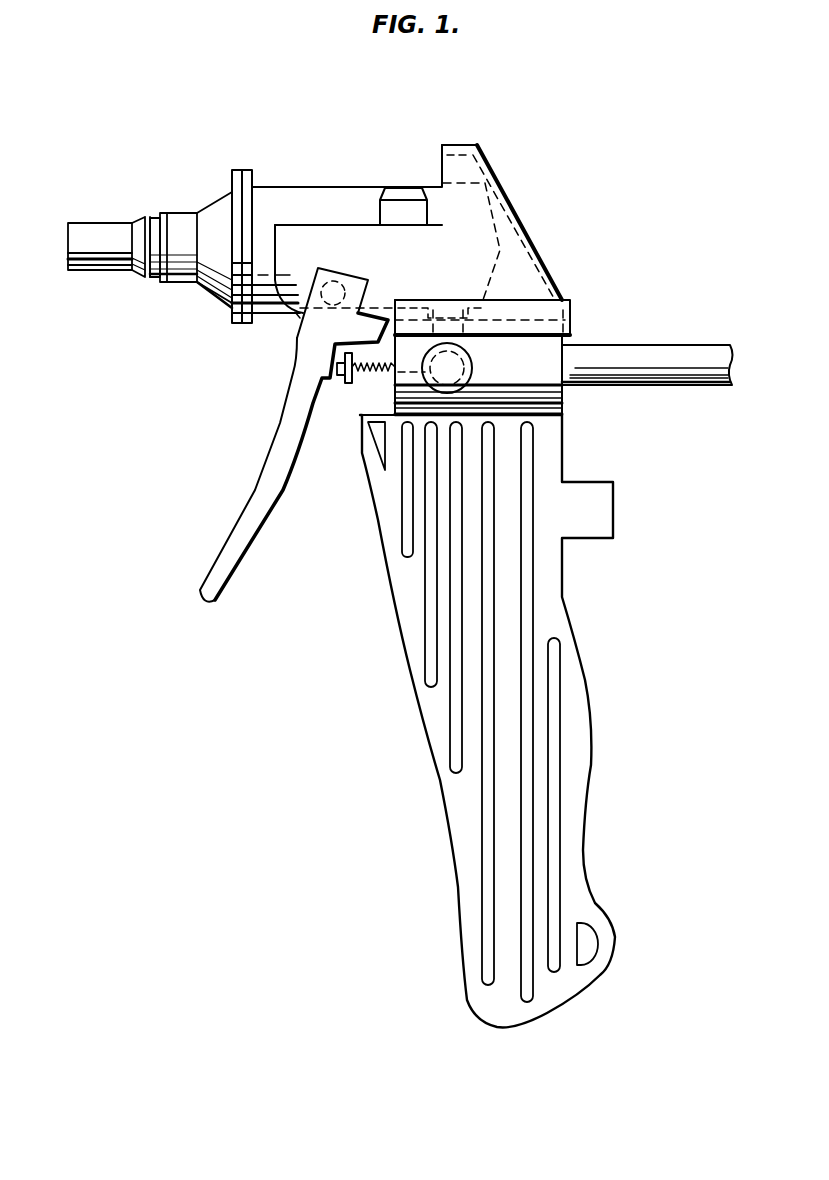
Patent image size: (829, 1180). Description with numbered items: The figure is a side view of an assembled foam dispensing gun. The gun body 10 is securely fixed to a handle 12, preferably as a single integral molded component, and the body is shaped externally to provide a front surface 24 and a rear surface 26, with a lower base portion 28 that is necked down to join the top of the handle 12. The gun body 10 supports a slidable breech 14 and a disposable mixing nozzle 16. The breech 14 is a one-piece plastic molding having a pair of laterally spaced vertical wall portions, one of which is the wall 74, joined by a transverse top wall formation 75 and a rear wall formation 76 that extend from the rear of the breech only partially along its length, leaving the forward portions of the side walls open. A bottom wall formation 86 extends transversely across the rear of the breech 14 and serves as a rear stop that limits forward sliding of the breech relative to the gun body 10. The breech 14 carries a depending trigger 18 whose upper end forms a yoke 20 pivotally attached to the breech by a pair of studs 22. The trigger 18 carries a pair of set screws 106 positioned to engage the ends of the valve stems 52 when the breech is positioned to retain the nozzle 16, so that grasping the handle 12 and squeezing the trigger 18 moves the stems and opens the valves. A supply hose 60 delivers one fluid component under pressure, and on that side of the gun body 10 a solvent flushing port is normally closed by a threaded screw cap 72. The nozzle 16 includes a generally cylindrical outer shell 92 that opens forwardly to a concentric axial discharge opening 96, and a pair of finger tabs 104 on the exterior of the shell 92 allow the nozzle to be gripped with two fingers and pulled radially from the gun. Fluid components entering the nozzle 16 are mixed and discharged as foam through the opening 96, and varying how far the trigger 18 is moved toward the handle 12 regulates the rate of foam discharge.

The gun body 10 is at (570, 342).
The handle 12 is at (590, 740).
The slidable breech 14 is at (538, 245).
The disposable mixing nozzle 16 is at (268, 185).
The trigger 18 is at (240, 545).
The yoke 20 is at (302, 318).
The studs 22 is at (347, 298).
The front surface 24 is at (393, 387).
The rear surface 26 is at (562, 398).
The base portion 28 is at (540, 415).
The valve stems 52 is at (345, 374).
The supply hose 60 is at (680, 377).
The threaded screw cap 72 is at (472, 374).
The vertical wall portion 74 is at (361, 259).
The top wall formation 75 is at (470, 143).
The rear wall formation 76 is at (510, 200).
The bottom wall formation 86 is at (574, 312).
The outer shell 92 is at (333, 219).
The discharge opening 96 is at (68, 248).
The finger tabs 104 is at (400, 193).
The set screws 106 is at (333, 372).